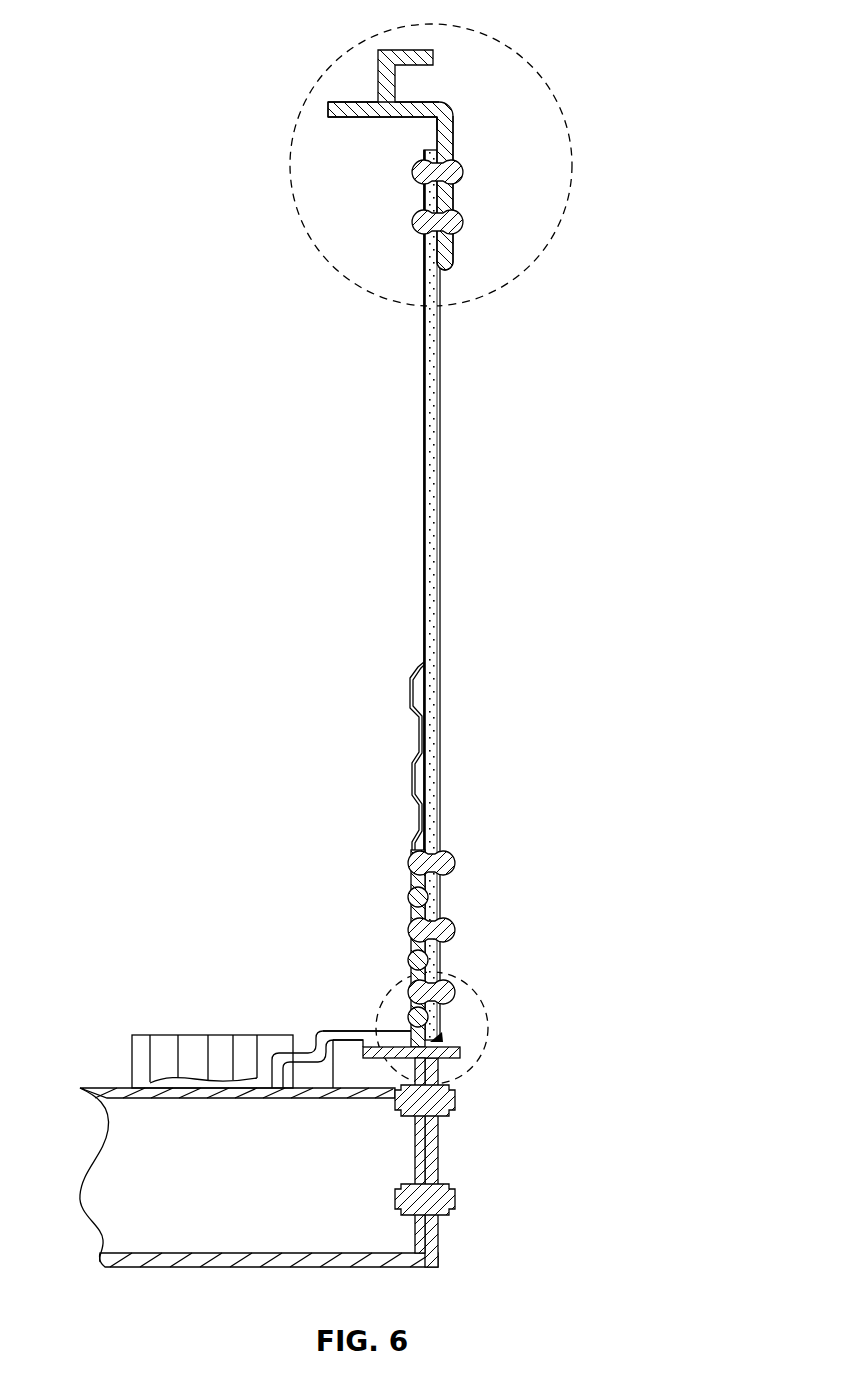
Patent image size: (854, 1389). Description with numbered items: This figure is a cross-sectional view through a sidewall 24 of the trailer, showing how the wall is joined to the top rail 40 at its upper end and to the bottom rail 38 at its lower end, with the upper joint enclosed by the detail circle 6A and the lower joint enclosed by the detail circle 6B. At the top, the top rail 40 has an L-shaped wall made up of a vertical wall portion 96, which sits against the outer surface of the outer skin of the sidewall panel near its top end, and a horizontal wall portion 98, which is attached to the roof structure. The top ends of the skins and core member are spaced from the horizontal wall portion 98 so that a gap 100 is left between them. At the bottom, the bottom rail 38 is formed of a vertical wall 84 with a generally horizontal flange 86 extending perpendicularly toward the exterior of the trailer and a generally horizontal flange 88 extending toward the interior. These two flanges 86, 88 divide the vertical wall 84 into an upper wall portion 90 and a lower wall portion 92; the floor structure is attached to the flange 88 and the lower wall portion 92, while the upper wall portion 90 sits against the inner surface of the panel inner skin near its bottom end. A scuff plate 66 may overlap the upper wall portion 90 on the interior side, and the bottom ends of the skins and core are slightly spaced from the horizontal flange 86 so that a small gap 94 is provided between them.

The detail view circle 6A is at (366, 38).
The detail view circle 6B is at (400, 984).
The sidewall 24 is at (443, 547).
The bottom rail 38 is at (455, 1222).
The top rail 40 is at (454, 92).
The scuff plate 66 is at (410, 774).
The vertical wall 84 is at (447, 1155).
The horizontal flange 86 is at (456, 1049).
The horizontal flange 88 is at (372, 1043).
The upper wall portion 90 is at (412, 955).
The lower wall portion 92 is at (438, 1128).
The gap 94 is at (445, 1034).
The vertical wall portion 96 is at (447, 128).
The horizontal wall portion 98 is at (330, 108).
The gap 100 is at (420, 131).